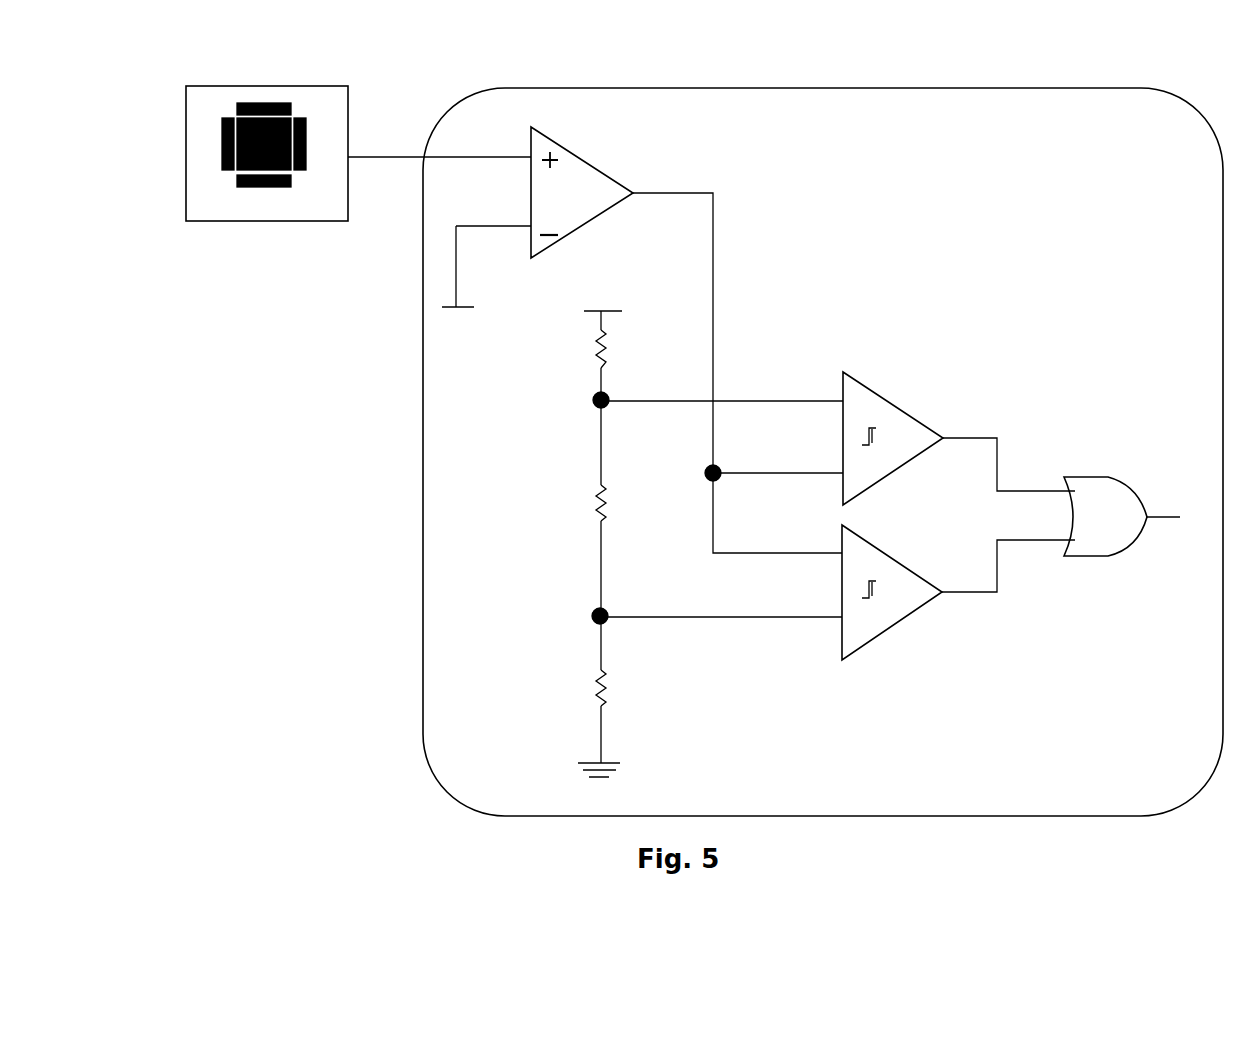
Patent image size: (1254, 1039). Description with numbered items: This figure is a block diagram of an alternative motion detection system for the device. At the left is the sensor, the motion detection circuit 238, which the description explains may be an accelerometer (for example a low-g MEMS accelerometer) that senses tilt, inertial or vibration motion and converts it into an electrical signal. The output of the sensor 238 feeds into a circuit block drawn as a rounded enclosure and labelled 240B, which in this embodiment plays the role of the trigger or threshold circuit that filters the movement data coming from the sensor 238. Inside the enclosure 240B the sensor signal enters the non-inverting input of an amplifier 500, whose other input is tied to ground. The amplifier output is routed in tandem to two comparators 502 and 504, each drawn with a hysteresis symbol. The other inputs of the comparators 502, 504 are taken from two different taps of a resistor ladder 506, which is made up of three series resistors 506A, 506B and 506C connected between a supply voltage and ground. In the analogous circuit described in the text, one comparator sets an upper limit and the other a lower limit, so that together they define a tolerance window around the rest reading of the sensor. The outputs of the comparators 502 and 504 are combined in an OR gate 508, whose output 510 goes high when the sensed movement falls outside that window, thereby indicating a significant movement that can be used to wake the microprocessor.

The motion detection circuit 238 is at (264, 222).
The sensor signal processing circuit 240B is at (722, 88).
The amplifier 500 is at (642, 340).
The first comparator with hysteresis 502 is at (959, 438).
The second comparator with hysteresis 504 is at (958, 592).
The resistor divider network 506 is at (564, 536).
The first resistor 506A is at (633, 349).
The second resistor 506B is at (633, 503).
The third resistor 506C is at (633, 688).
The OR gate 508 is at (1105, 503).
The output signal 510 is at (1184, 517).